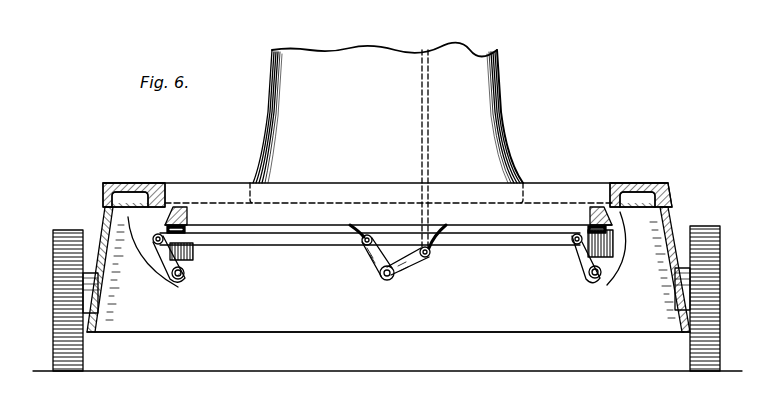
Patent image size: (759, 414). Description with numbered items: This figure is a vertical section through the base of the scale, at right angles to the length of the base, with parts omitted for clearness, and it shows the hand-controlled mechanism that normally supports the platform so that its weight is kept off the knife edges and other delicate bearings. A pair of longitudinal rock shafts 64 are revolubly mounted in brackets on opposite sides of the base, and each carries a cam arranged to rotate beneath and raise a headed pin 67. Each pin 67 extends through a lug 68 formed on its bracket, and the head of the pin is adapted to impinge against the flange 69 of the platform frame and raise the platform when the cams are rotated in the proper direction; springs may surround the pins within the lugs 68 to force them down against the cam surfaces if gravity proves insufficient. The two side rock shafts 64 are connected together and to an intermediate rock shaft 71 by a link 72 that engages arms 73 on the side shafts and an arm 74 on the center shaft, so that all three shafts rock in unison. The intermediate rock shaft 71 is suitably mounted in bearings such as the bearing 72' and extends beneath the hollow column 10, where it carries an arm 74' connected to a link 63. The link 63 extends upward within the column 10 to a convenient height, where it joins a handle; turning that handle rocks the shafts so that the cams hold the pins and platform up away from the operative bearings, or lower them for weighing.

The hollow post or standard 10 is at (504, 110).
The link 63 is at (430, 140).
The longitudinal shafts 64 is at (186, 279).
The headed pins 67 is at (195, 228).
The lugs 68 is at (195, 254).
The flange 69 is at (182, 205).
The intermediate rock shaft 71 is at (386, 280).
The link 72 is at (370, 254).
The bearing 72' is at (398, 222).
The arms 73 is at (167, 262).
The arm 74 is at (366, 261).
The arm 74' is at (412, 272).